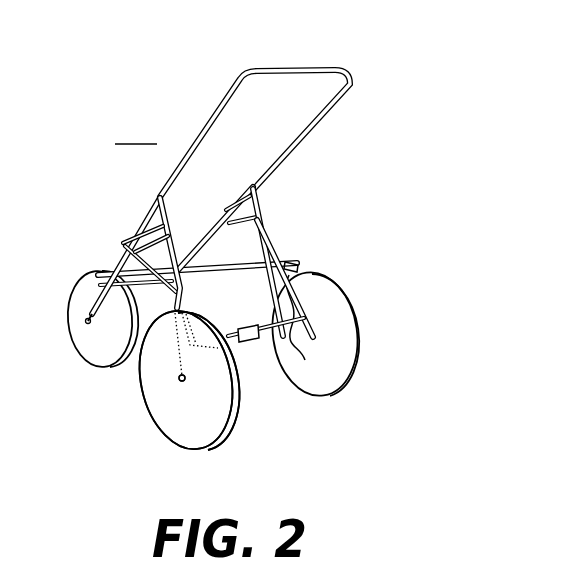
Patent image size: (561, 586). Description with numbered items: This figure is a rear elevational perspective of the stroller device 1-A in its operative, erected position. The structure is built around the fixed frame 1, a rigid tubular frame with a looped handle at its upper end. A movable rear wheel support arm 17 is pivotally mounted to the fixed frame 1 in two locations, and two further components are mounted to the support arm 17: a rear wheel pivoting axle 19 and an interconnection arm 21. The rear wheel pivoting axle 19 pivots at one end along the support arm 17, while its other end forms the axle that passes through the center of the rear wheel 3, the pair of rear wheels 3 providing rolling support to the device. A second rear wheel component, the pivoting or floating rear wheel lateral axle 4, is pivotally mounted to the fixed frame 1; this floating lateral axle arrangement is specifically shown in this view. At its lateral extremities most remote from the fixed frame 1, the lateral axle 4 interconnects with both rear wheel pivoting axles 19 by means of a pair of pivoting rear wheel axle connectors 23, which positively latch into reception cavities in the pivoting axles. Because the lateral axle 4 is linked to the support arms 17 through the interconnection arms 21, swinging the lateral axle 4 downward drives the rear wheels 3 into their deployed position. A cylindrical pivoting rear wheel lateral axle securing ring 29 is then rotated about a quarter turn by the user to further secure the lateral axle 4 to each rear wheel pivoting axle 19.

The fixed frame 1 is at (254, 70).
The stroller device 1-A is at (136, 132).
The rear wheel 3 is at (148, 416).
The pivoting rear wheel lateral axle 4 is at (253, 344).
The movable rear wheel support arm 17 is at (281, 262).
The rear wheel pivoting axle 19 is at (323, 277).
The interconnection arm 21 is at (145, 219).
The pivoting rear wheel axle connector 23 is at (305, 361).
The pivoting rear wheel lateral axle securing ring 29 is at (242, 328).